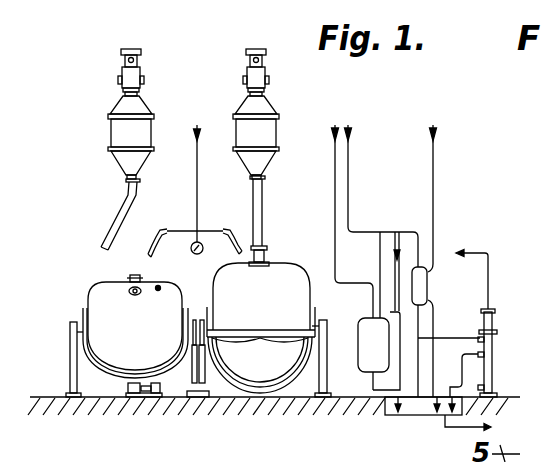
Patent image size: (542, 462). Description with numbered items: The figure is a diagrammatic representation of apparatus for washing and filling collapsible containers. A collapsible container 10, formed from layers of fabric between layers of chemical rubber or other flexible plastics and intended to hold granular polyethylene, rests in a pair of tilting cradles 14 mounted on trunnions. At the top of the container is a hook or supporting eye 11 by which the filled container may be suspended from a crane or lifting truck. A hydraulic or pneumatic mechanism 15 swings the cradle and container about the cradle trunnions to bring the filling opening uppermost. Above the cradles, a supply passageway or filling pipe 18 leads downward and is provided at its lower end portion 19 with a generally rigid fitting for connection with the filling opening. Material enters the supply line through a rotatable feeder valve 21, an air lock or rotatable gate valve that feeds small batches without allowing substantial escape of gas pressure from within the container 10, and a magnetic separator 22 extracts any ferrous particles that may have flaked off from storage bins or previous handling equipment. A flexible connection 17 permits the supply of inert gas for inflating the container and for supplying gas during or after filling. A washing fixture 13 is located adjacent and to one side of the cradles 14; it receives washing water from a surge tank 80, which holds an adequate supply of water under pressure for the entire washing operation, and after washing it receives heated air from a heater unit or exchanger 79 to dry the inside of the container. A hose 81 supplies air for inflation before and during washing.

The collapsible container 10 is at (133, 346).
The hook or supporting eye 11 is at (360, 461).
The washing fixture 13 is at (495, 357).
The tilting cradles 14 is at (110, 378).
The hydraulic or pneumatic mechanism 15 is at (212, 386).
The flexible connection 17 is at (168, 230).
The supply passageway or filling pipe 18 is at (121, 206).
The lower end portion 19 is at (268, 255).
The rotatable feeder valve 21 is at (122, 74).
The magnetic separator 22 is at (120, 124).
The heater unit or exchanger 79 is at (428, 287).
The surge tank 80 is at (364, 347).
The hose 81 is at (401, 262).